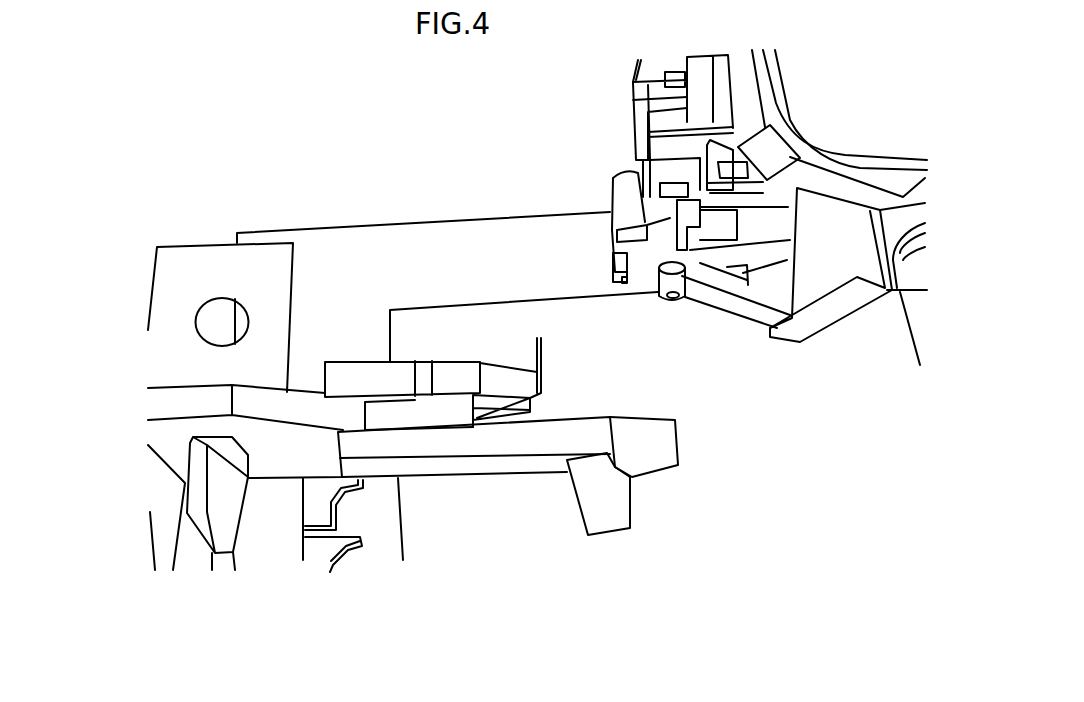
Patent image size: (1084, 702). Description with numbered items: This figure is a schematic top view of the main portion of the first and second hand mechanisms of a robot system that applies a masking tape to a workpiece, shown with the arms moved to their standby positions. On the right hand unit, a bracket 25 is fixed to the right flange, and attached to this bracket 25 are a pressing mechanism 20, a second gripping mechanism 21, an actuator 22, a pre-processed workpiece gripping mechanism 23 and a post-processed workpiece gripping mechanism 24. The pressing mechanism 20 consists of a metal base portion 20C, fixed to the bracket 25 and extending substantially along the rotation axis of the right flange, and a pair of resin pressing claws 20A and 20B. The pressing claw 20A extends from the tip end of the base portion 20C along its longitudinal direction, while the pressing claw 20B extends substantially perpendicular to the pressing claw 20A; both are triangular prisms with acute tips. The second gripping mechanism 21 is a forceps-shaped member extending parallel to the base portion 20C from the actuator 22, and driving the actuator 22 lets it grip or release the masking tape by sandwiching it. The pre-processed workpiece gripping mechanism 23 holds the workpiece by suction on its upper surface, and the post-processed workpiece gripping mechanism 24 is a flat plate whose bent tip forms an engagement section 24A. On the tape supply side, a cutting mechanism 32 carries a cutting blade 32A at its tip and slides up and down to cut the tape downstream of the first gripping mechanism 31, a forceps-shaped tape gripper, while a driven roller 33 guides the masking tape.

The pressing mechanism 20 is at (474, 462).
The pressing claw 20A is at (667, 440).
The pressing claw 20B is at (612, 510).
The base portion 20C is at (508, 437).
The second gripping mechanism 21 is at (535, 378).
The actuator 22 is at (362, 362).
The pre-processed workpiece gripping mechanism 23 is at (285, 543).
The post-processed workpiece gripping mechanism 24 is at (192, 275).
The engagement section 24A is at (297, 250).
The bracket 25 is at (172, 402).
The first gripping mechanism 31 is at (628, 285).
The cutting mechanism 32 is at (605, 187).
The cutting blade 32A is at (612, 237).
The driven roller 33 is at (662, 248).